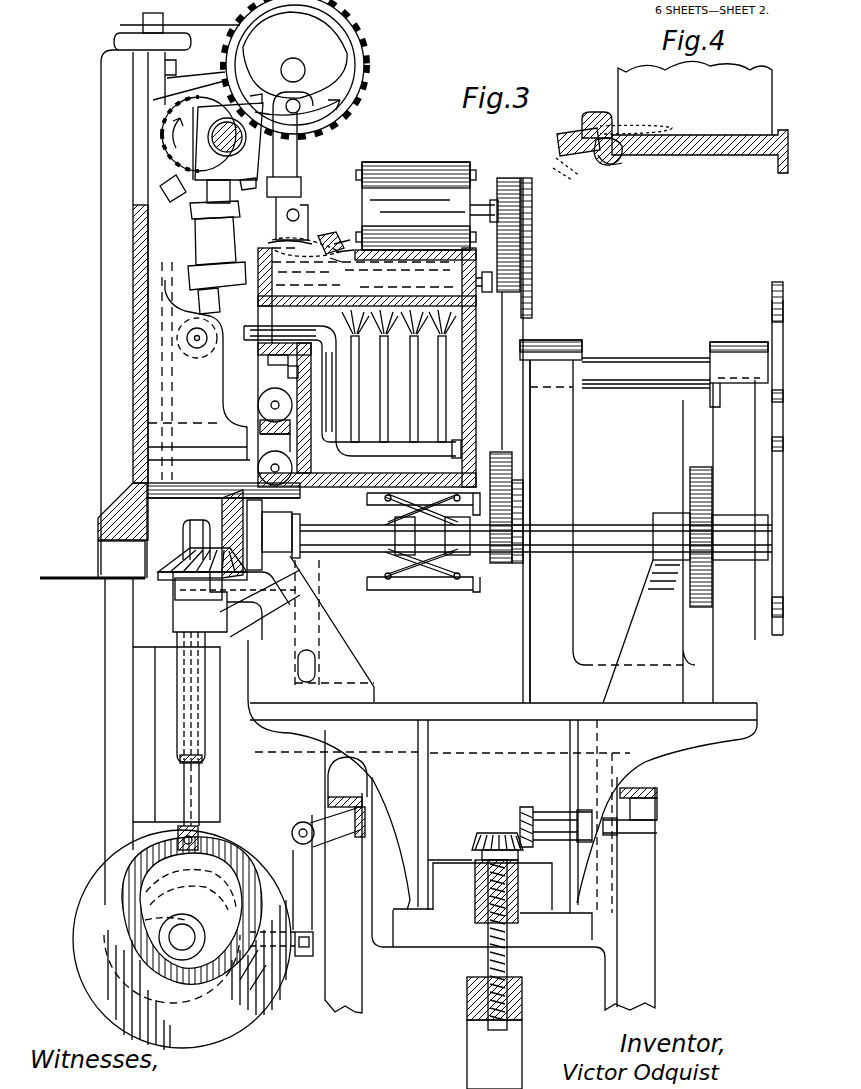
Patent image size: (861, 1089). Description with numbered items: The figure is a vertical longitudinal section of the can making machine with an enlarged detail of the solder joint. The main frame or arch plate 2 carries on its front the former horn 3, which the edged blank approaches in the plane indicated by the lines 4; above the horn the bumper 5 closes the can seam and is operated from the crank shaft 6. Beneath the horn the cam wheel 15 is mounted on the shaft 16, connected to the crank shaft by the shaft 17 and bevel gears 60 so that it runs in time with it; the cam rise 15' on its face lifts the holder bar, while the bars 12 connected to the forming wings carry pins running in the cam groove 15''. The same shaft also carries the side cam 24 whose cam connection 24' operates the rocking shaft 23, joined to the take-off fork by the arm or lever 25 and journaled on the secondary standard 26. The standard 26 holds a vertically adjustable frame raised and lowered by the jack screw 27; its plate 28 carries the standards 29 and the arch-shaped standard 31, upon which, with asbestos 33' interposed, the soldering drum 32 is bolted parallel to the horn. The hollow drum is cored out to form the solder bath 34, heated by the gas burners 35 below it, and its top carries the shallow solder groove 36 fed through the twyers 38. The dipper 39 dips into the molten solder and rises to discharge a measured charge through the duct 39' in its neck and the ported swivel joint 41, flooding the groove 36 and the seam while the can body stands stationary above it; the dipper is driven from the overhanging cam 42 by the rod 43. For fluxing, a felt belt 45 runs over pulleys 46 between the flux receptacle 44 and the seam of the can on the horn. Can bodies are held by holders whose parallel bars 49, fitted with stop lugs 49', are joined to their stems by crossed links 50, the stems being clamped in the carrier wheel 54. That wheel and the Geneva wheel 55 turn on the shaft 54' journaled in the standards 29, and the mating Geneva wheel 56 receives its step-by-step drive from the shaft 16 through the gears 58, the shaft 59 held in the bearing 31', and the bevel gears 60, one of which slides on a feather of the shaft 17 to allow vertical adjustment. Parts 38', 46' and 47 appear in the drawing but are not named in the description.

In FIG. 3, the main frame or arch plate 2 is at (135, 352).
In FIG. 3, the former horn 3 is at (223, 541).
In FIG. 3, the lines 4 is at (78, 580).
In FIG. 3, the bumper 5 is at (199, 370).
In FIG. 3, the crank shaft 6 is at (196, 139).
In FIG. 3, the bars 12 is at (204, 792).
In FIG. 3, the cam wheel 15 is at (176, 940).
In FIG. 3, the cam rise 15' is at (211, 833).
In FIG. 3, the cam groove 15'' is at (183, 911).
In FIG. 3, the shaft 16 is at (182, 937).
In FIG. 3, the shaft 17 is at (180, 670).
In FIG. 3, the rocking shaft 23 is at (296, 822).
In FIG. 3, the side cam 24 is at (191, 940).
In FIG. 3, the cam connection 24' is at (303, 960).
In FIG. 3, the arm or lever 25 is at (290, 752).
In FIG. 3, the secondary frame or standard 26 is at (345, 966).
In FIG. 3, the jack screw 27 is at (480, 878).
In FIG. 3, the plate 28 is at (448, 704).
In FIG. 3, the standards 29 is at (552, 343).
In FIG. 3, the standard 31 is at (297, 629).
In FIG. 3, the bearing 31' is at (263, 365).
In FIG. 3, the soldering drum 32 is at (476, 340).
In FIG. 4, the soldering drum 32 is at (774, 168).
In FIG. 3, the asbestos 33' is at (352, 384).
In FIG. 3, the solder pot or bath 34 is at (367, 277).
In FIG. 3, the gas burners 35 is at (440, 372).
In FIG. 4, the solder groove 36 is at (716, 136).
In FIG. 3, the twyers 38 is at (337, 241).
In FIG. 4, the wick holder 38' is at (597, 113).
In FIG. 3, the dipper 39 is at (309, 246).
In FIG. 4, the duct 39' is at (570, 146).
In FIG. 3, the ported swivel or joint 41 is at (338, 258).
In FIG. 4, the ported swivel or joint 41 is at (602, 164).
In FIG. 3, the overhanging cam 42 is at (365, 82).
In FIG. 3, the rod 43 is at (300, 146).
In FIG. 3, the flux receptacle 44 is at (275, 442).
In FIG. 3, the belt 45 is at (262, 418).
In FIG. 3, the pulleys 46 is at (260, 424).
In FIG. 3, the gear 46' is at (533, 235).
In FIG. 3, the scissor link 47 is at (414, 580).
In FIG. 3, the parallel bars 49 is at (423, 535).
In FIG. 3, the stop lugs 49' is at (428, 381).
In FIG. 3, the crossed links 50 is at (440, 515).
In FIG. 3, the carrier wheel 54 is at (517, 440).
In FIG. 3, the shaft 54' is at (646, 363).
In FIG. 3, the wheel 55 is at (782, 286).
In FIG. 3, the wheel 56 is at (774, 530).
In FIG. 3, the gears 58 is at (700, 466).
In FIG. 3, the shaft 59 is at (606, 535).
In FIG. 3, the beveled gears 60 is at (146, 565).